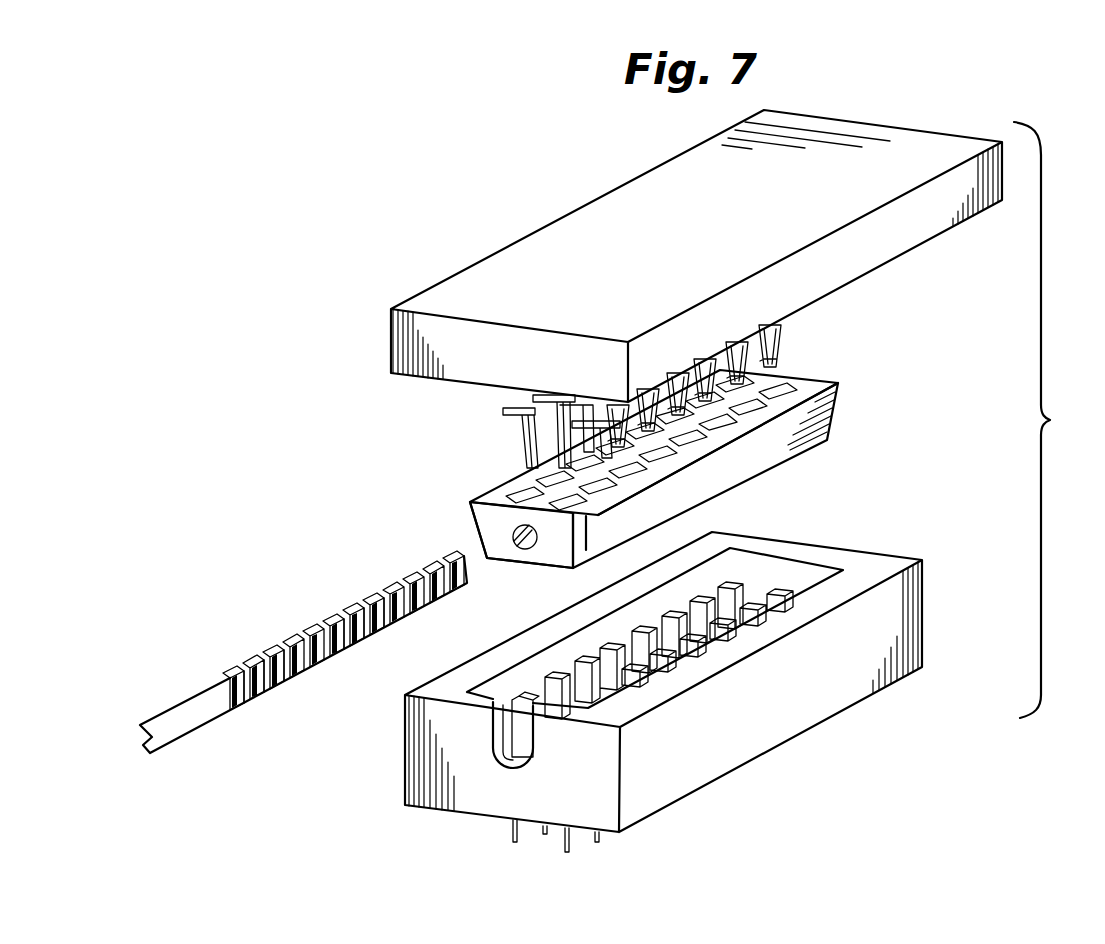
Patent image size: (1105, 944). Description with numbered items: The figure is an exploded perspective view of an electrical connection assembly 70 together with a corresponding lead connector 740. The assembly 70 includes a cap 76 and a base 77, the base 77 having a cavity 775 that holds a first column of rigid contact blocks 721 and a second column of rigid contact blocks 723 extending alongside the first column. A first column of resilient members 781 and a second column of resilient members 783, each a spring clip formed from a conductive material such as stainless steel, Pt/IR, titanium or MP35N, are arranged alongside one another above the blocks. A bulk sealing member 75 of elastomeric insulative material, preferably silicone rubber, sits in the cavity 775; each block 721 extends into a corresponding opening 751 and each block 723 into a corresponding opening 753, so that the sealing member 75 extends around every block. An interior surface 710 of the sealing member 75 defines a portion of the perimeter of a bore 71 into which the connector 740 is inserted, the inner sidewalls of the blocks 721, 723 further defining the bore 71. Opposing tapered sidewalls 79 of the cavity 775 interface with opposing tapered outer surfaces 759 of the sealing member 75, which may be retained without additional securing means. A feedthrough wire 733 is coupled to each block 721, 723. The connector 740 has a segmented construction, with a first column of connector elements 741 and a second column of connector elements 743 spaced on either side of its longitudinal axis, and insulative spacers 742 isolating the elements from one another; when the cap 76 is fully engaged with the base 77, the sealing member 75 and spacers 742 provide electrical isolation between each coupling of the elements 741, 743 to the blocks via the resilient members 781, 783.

The electrical connection assembly 70 is at (1053, 420).
The cap 76 is at (540, 238).
The bulk sealing member 75 is at (645, 484).
The tapered outer surfaces 759 is at (724, 492).
The opening 753 is at (545, 485).
The opening 751 is at (535, 483).
The bore 71 is at (512, 540).
The interior surface 710 is at (528, 550).
The second column of resilient members 783 is at (785, 362).
The first column of resilient members 781 is at (503, 412).
The base 77 is at (663, 704).
The cavity 775 is at (762, 586).
The tapered sidewalls 79 is at (632, 636).
The first column of rigid contact blocks 721 is at (607, 657).
The second column of rigid contact blocks 723 is at (650, 702).
The feedthrough wire 733 is at (596, 842).
The lead connector 740 is at (264, 657).
The connector elements 741 is at (262, 690).
The insulative spacers 742 is at (353, 607).
The connector elements 743 is at (326, 690).